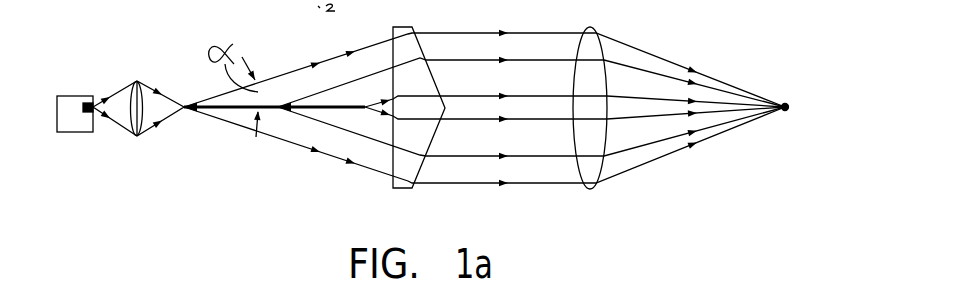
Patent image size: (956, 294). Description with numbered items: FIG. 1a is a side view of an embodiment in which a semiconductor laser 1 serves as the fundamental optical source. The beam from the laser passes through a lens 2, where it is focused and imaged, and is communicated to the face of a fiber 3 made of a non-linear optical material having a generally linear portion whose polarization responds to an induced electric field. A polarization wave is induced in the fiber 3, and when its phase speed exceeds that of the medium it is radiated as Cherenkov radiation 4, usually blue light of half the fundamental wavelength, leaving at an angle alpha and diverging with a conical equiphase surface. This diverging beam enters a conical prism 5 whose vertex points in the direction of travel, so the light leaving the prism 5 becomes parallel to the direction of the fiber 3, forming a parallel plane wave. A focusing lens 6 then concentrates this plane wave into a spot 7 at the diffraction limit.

The semiconductor laser 1 is at (70, 132).
The lens 2 is at (143, 127).
The fiber 3 is at (247, 117).
The Cherenkov radiation 4 is at (347, 67).
The conical prism 5 is at (403, 188).
The focusing lens 6 is at (603, 163).
The spot 7 is at (782, 113).